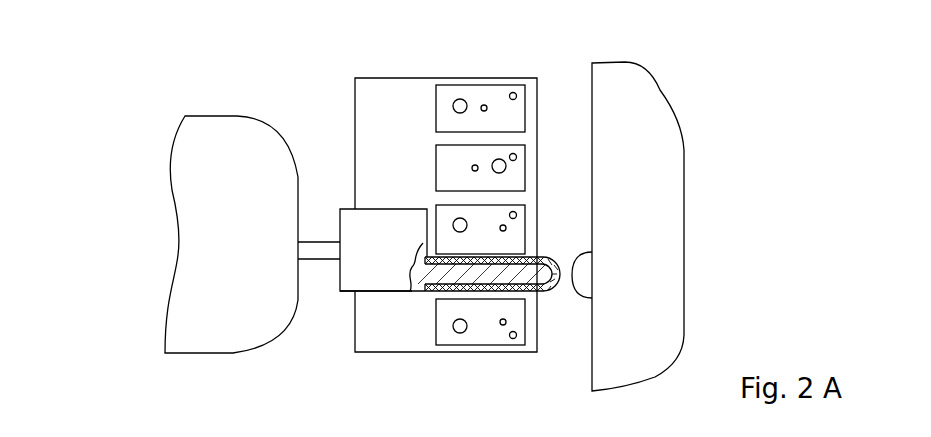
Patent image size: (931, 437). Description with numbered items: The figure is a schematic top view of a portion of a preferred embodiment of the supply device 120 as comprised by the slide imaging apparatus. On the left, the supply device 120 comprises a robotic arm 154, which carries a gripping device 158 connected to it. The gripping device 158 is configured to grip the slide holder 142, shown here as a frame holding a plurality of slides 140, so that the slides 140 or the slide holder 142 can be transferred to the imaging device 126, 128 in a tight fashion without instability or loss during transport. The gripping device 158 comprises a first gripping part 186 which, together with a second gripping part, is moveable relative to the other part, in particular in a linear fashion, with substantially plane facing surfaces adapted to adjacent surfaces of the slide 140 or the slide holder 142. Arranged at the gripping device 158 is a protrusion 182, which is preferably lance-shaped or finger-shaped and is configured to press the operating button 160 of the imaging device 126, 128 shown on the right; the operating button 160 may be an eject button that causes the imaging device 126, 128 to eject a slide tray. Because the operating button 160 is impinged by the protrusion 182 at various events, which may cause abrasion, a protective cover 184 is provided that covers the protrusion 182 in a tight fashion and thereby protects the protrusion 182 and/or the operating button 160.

The supply device 120 is at (178, 234).
The robotic arm 154 is at (235, 247).
The gripping device 158 is at (388, 259).
The first gripping part 186 is at (383, 282).
The slide holder 142 is at (390, 90).
The slides 140 is at (480, 97).
The operating button 160 is at (499, 275).
The protective cover 184 is at (555, 296).
The protrusion 182 is at (578, 270).
The imaging device 126 is at (706, 226).
The imaging device 128 is at (638, 226).